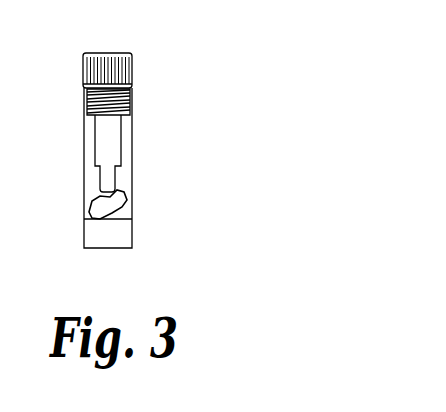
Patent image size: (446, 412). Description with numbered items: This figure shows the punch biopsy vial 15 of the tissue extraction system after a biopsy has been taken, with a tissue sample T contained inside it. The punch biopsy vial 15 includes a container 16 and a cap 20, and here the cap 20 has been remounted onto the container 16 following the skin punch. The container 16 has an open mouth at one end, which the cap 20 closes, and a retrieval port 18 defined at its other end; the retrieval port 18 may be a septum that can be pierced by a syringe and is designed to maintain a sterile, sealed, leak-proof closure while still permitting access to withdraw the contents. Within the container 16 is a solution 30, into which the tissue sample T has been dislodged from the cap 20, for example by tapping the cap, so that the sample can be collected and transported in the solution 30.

The cap 20 is at (132, 62).
The punch biopsy vial 15 is at (137, 113).
The container 16 is at (132, 160).
The solution 30 is at (93, 183).
The tissue sample T is at (127, 204).
The retrieval port 18 is at (127, 237).